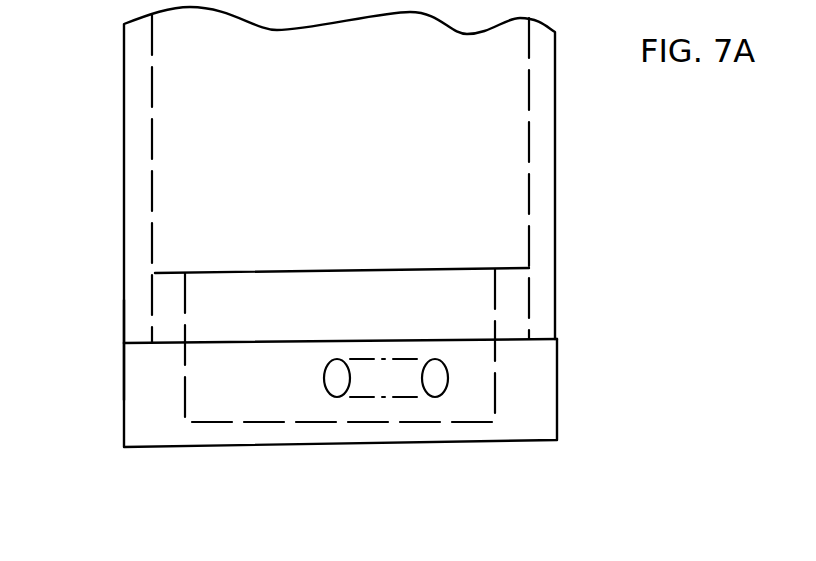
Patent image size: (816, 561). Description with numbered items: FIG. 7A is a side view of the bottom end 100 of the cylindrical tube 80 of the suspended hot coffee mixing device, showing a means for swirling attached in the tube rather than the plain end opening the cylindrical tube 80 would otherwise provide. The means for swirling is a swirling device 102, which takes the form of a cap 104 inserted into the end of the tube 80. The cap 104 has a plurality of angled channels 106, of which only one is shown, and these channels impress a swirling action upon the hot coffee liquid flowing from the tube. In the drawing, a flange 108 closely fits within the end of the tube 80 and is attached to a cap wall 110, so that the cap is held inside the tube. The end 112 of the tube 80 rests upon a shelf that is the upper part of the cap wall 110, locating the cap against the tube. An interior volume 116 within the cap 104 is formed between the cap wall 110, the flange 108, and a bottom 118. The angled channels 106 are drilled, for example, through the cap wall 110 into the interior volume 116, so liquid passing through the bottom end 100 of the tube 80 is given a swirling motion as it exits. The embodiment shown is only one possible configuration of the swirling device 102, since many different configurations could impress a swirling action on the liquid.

The cylindrical tube 80 is at (556, 105).
The bottom end 100 is at (593, 254).
The swirling device 102 is at (582, 388).
The cap 104 is at (138, 343).
The angled channels 106 is at (370, 400).
The flange 108 is at (172, 273).
The cap wall 110 is at (125, 356).
The end of the tube 112 is at (125, 343).
The interior volume 116 is at (256, 392).
The bottom 118 is at (222, 447).